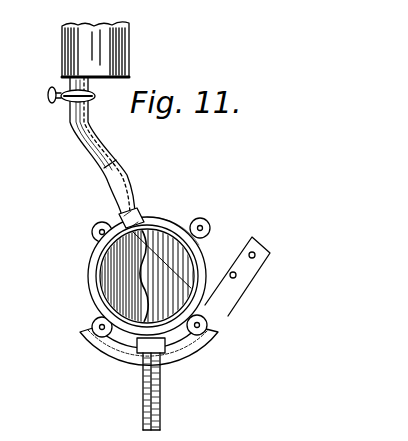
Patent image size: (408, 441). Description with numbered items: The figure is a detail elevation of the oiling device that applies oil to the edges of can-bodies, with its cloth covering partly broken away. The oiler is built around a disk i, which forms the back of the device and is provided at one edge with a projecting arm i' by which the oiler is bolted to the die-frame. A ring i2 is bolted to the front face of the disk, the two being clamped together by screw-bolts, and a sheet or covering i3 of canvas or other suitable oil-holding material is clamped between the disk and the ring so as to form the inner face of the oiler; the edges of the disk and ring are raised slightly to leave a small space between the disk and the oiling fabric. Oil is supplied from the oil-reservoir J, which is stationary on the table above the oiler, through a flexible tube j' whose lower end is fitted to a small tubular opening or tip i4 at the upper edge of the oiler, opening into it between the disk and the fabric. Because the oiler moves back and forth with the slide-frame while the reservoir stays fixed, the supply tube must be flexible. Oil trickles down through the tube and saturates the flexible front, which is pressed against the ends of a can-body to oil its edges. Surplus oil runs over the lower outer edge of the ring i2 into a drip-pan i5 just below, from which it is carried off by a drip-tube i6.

The oil-reservoir J is at (129, 46).
The flexible tube j' is at (85, 147).
The disk i is at (128, 277).
The projecting arm i' is at (251, 276).
The ring i2 is at (167, 220).
The sheet or covering i3 is at (165, 285).
The tubular opening or tip i4 is at (133, 213).
The drip-pan i5 is at (195, 347).
The drip-tube i6 is at (158, 395).